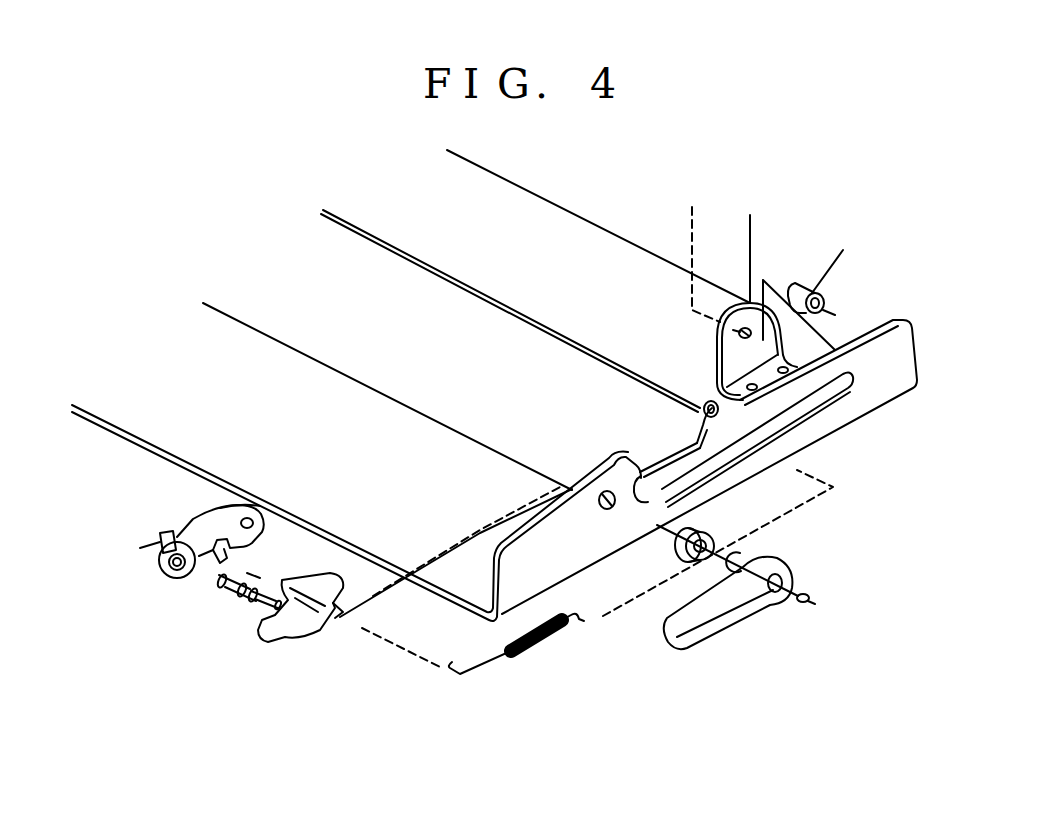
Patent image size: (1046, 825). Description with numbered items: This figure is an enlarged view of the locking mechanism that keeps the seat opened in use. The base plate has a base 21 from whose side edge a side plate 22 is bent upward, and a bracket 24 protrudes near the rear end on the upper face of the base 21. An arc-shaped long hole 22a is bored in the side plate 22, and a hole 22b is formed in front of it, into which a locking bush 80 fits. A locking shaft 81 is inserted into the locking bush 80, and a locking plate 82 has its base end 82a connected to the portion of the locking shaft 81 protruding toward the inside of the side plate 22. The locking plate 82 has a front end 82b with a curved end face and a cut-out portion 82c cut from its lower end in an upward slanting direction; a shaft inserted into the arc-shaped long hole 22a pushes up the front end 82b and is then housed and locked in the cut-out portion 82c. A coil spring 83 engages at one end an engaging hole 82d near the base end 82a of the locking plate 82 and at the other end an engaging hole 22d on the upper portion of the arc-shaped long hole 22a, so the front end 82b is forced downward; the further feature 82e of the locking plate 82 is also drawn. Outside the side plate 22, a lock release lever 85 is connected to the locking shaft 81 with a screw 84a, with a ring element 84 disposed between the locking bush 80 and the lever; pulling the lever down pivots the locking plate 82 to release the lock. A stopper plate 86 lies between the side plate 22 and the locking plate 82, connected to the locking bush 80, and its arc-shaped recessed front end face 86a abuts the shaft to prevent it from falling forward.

The base 21 is at (305, 355).
The side plate 22 is at (875, 330).
The arc-shaped long hole 22a is at (662, 480).
The hole 22b is at (604, 490).
The engaging hole 22d is at (710, 402).
The bracket 24 is at (712, 340).
The locking bush 80 is at (710, 527).
The locking shaft 81 is at (240, 598).
The locking plate 82 is at (203, 510).
The base end 82a is at (160, 555).
The front end 82b is at (263, 538).
The cut-out portion 82c is at (200, 567).
The engaging hole 82d is at (182, 532).
The arch portion of lever 82e is at (260, 497).
The coil spring 83 is at (533, 655).
The clip 84 is at (743, 548).
The screw 84a is at (813, 602).
The lock release lever 85 is at (707, 640).
The stopper plate 86 is at (267, 640).
The front end face 86a is at (337, 620).